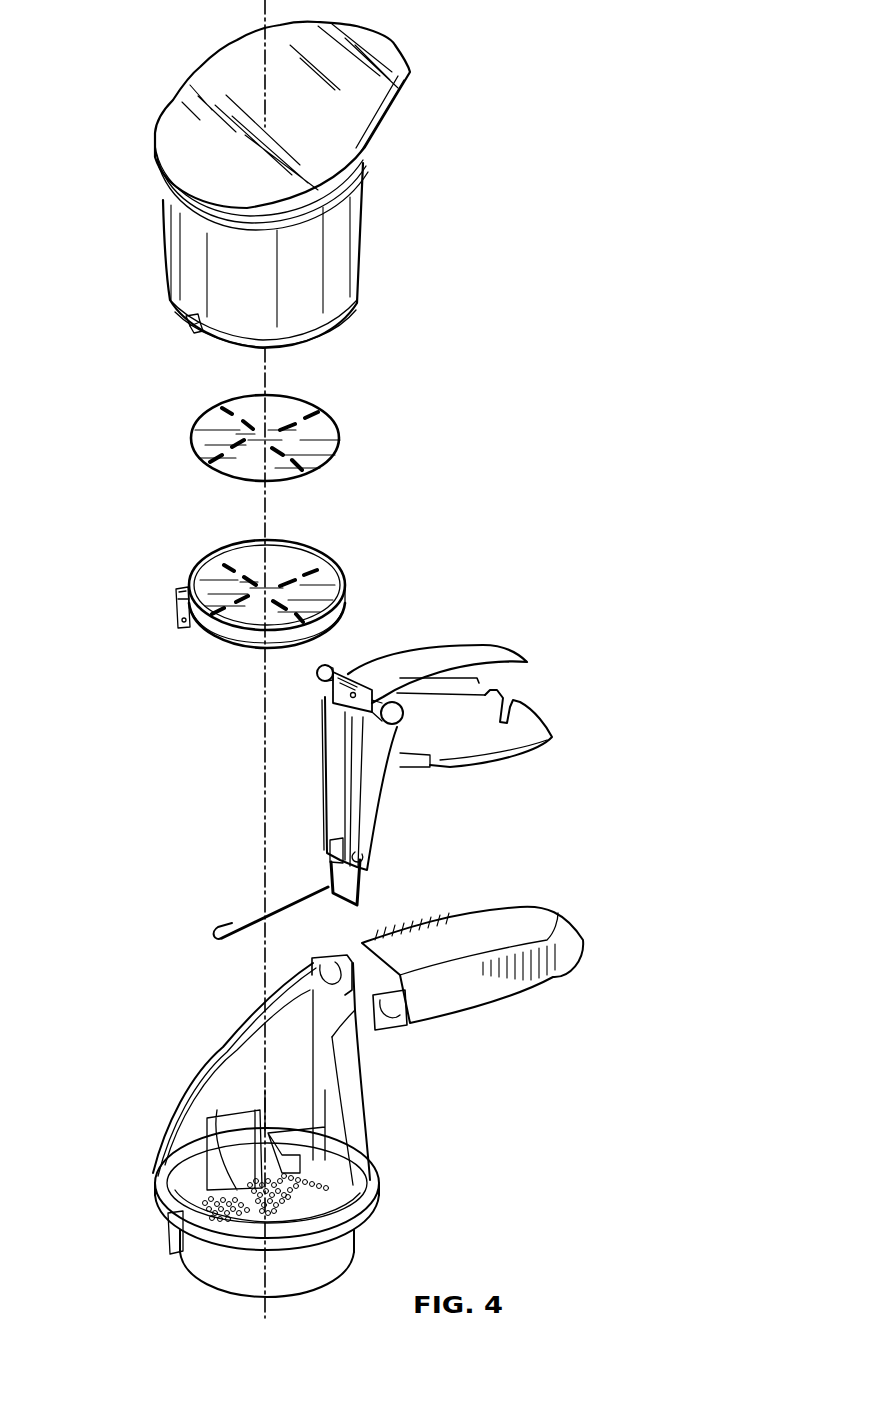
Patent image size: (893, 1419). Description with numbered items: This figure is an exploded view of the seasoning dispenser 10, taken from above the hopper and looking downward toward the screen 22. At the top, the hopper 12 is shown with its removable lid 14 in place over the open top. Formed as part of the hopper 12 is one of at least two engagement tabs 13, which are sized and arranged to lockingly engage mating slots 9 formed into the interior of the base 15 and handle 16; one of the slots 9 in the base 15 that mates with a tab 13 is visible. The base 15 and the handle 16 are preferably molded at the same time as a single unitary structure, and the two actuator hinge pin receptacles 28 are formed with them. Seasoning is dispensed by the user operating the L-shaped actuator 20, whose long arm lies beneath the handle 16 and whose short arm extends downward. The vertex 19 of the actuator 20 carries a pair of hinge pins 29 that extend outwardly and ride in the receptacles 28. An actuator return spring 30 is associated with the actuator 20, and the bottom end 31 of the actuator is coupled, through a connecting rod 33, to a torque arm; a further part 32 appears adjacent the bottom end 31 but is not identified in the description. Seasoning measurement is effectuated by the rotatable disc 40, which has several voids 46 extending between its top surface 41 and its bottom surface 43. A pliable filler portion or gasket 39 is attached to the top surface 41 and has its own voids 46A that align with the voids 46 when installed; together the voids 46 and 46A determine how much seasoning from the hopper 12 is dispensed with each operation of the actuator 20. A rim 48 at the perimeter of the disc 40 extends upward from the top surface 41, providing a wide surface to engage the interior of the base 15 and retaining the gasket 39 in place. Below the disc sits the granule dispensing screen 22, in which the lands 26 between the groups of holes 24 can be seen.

The mating slots 9 is at (217, 1230).
The seasoning dispenser 10 is at (115, 845).
The hopper 12 is at (365, 227).
The engagement tabs 13 is at (187, 320).
The removable lid 14 is at (170, 148).
The base 15 is at (352, 1237).
The handle 16 is at (500, 1007).
The vertex of the actuator 19 is at (394, 735).
The L-shaped actuator 20 is at (398, 771).
The granule dispensing screen 22 is at (297, 1190).
The groups of holes 24 is at (360, 1133).
The lands 26 is at (212, 1090).
The actuator hinge pin receptacles 28 is at (320, 960).
The hinge pins 29 is at (325, 685).
The actuator return spring 30 is at (470, 645).
The bottom end 31 is at (360, 857).
The wire loop 32 is at (362, 887).
The connecting rod 33 is at (246, 925).
The gasket 39 is at (260, 438).
The disc 40 is at (267, 612).
The top surface 41 is at (259, 569).
The bottom surface 43 is at (255, 650).
The voids 46 is at (228, 565).
The voids 46A is at (225, 410).
The rim 48 is at (220, 632).